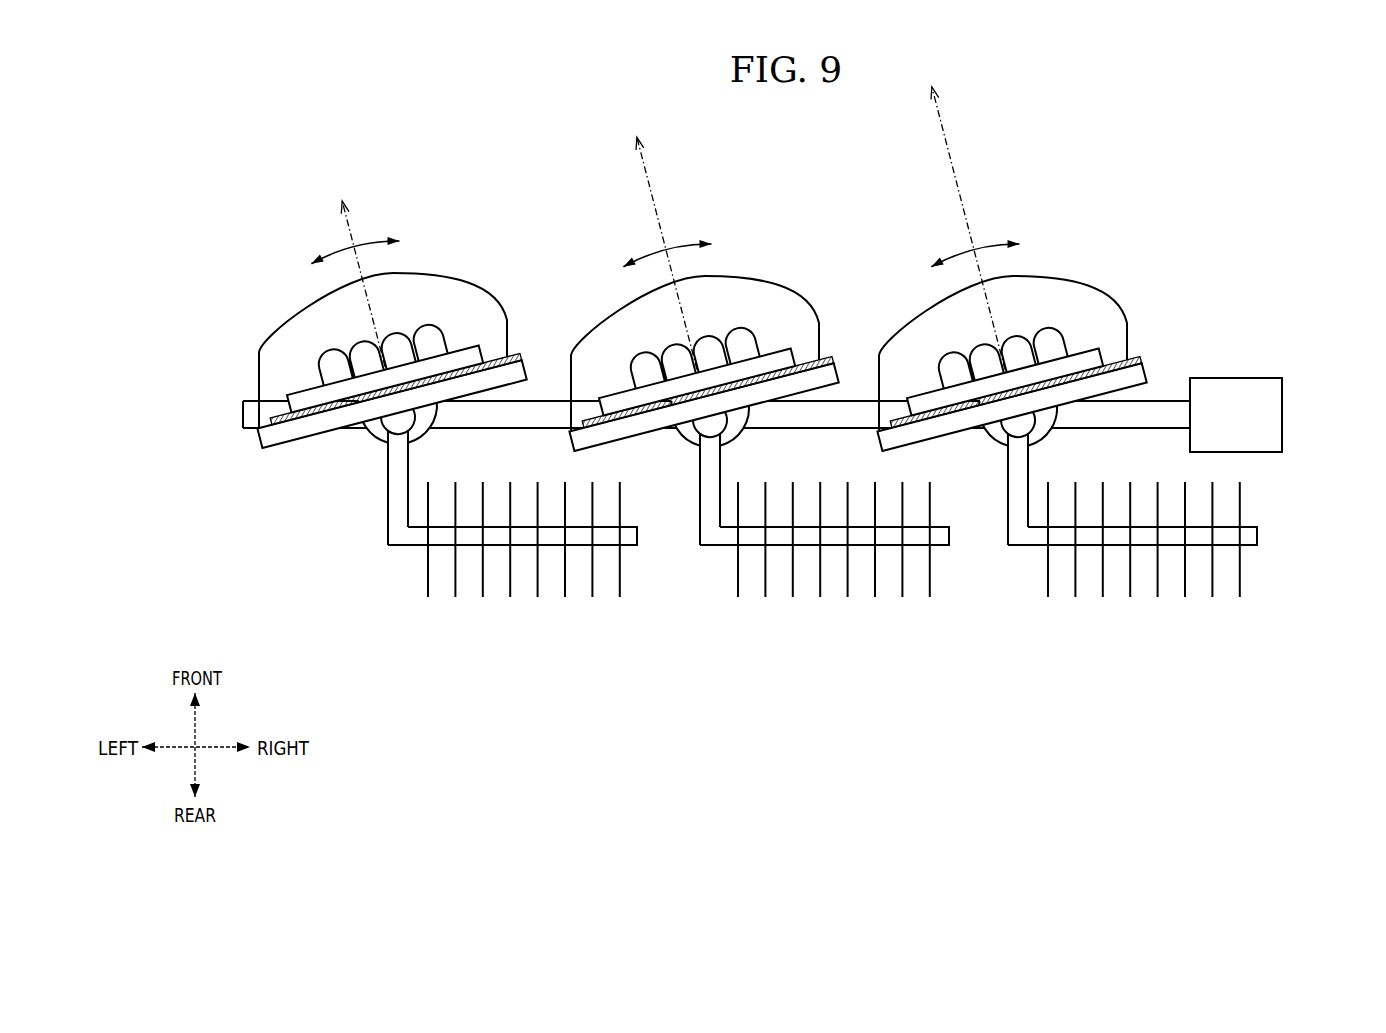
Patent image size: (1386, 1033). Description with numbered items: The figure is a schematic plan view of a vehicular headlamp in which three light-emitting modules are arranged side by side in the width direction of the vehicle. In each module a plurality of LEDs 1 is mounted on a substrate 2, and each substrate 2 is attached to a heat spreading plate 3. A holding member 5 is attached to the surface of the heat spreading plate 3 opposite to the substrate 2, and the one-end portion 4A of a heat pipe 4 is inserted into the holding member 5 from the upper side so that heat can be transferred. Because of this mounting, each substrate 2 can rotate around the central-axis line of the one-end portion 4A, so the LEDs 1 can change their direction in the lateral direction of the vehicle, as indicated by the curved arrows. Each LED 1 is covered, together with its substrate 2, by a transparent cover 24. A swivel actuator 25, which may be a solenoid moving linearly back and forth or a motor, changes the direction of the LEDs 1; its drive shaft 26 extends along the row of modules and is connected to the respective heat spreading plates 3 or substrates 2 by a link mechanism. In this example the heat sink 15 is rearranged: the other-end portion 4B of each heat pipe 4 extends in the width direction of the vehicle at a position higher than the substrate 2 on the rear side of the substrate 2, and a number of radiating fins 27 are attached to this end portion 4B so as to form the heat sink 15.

The LED 1 is at (357, 343).
The substrate 2 is at (303, 386).
The heat spreading plate 3 is at (285, 446).
The heat pipe 4 is at (388, 486).
The one-end portion of the heat pipe 4A is at (403, 413).
The other-end portion of the heat pipe 4B is at (408, 548).
The holding member 5 is at (434, 447).
The heat sink 15 is at (543, 636).
The transparent cover 24 is at (297, 311).
The swivel actuator 25 is at (1283, 420).
The drive shaft 26 is at (1153, 402).
The radiating fins 27 is at (512, 583).